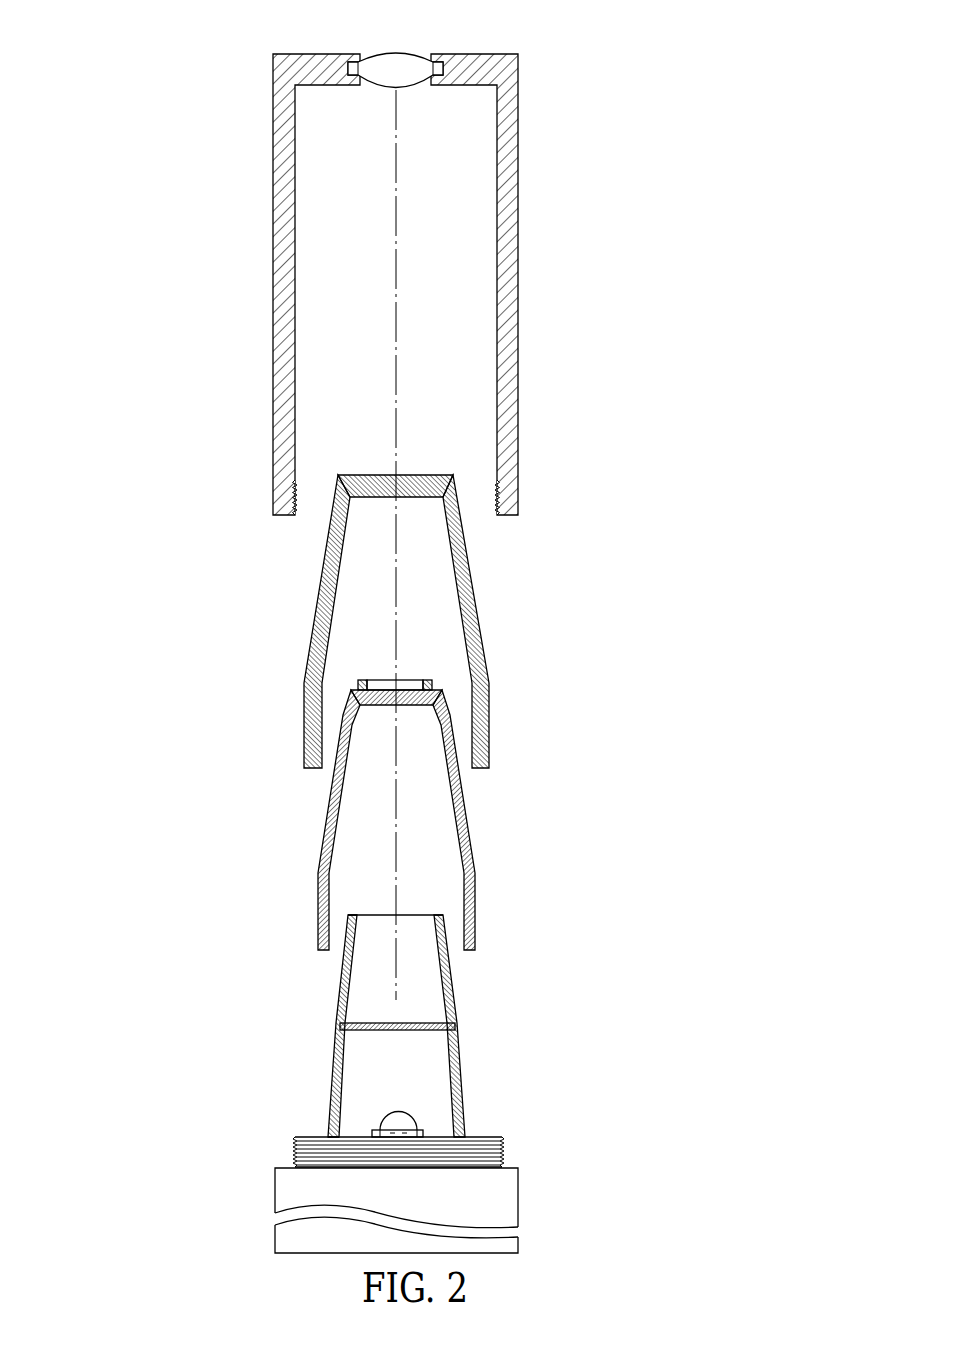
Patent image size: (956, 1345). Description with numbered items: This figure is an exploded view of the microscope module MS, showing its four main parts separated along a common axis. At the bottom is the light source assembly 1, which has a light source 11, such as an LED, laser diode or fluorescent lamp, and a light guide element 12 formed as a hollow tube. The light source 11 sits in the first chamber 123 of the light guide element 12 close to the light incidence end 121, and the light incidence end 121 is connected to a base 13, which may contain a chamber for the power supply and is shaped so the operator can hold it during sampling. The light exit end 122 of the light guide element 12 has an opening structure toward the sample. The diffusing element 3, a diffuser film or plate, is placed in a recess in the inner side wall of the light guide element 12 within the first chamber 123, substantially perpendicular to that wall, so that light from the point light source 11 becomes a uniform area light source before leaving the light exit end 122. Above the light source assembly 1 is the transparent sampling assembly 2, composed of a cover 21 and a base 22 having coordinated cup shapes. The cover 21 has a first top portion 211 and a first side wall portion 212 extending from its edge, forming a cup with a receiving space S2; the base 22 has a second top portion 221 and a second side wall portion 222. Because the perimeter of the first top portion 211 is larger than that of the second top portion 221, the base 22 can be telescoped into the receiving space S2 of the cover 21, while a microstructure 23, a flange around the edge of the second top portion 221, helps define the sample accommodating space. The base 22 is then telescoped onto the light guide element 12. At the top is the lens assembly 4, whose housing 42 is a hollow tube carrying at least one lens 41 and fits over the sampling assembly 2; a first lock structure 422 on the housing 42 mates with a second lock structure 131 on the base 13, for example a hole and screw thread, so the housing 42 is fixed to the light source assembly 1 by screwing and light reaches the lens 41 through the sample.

The microscope module MS is at (171, 109).
The light source assembly 1 is at (527, 991).
The light source 11 is at (405, 1121).
The light guide element 12 is at (463, 1045).
The light incidence end 121 is at (330, 1115).
The light exit end 122 is at (347, 917).
The first chamber 123 is at (389, 1060).
The base 13 is at (274, 1199).
The second lock structure 131 is at (503, 1150).
The sampling assembly 2 is at (563, 713).
The cover 21 is at (491, 722).
The first top portion 211 is at (362, 483).
The first side wall portion 212 is at (321, 590).
The base 22 is at (468, 812).
The second top portion 221 is at (418, 681).
The second side wall portion 222 is at (325, 841).
The microstructure 23 is at (361, 680).
The diffusing element 3 is at (432, 1024).
The lens assembly 4 is at (520, 314).
The lens 41 is at (406, 72).
The housing 42 is at (505, 232).
The first lock structure 422 is at (500, 493).
The receiving space S2 is at (438, 603).